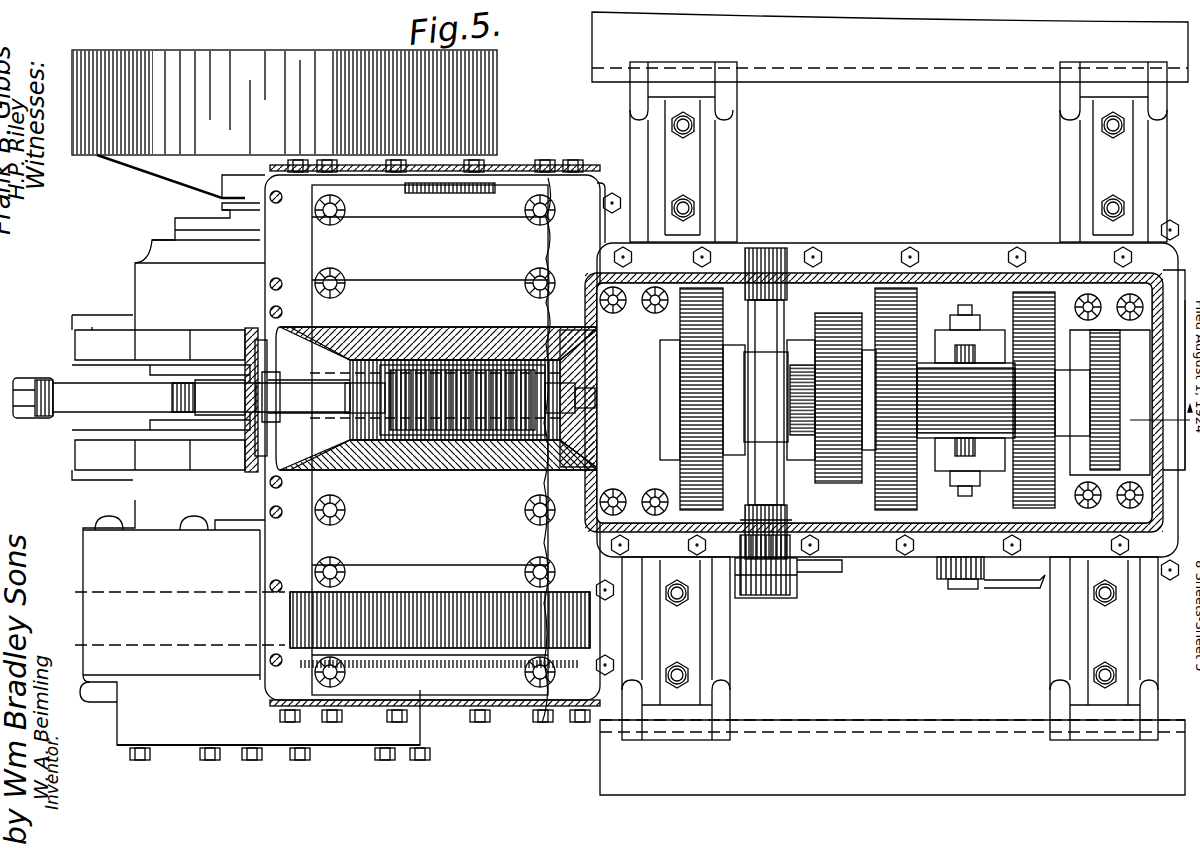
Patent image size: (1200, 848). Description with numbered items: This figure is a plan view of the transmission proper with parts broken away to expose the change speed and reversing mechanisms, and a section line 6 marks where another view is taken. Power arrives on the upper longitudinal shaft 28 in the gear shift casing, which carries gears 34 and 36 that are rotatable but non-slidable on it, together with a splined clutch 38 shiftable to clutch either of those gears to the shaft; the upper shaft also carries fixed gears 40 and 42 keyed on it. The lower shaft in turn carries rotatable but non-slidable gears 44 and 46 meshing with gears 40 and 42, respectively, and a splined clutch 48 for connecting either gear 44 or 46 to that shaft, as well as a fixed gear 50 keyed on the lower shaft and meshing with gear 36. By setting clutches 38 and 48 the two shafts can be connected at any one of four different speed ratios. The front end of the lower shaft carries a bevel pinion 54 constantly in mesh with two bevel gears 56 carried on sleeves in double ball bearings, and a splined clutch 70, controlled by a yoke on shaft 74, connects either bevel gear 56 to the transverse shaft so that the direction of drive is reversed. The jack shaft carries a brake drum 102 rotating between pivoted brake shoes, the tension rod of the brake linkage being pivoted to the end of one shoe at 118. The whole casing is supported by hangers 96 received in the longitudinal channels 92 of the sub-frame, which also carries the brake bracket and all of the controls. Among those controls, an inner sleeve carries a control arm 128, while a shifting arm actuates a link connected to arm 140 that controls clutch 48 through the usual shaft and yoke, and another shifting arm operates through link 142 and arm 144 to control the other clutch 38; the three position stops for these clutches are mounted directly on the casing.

The brake drum 102 is at (177, 145).
The shaft 74 is at (60, 395).
The pivot 118 is at (25, 410).
The upper longitudinal shaft 28 is at (298, 398).
The bevel gears 56 is at (350, 395).
The splined clutch 70 is at (430, 372).
The bevel pinion 54 is at (545, 485).
The gear 34 is at (715, 328).
The splined clutch 38 is at (780, 350).
The gear 36 is at (828, 345).
The fixed gear 40 is at (875, 345).
The fixed gear 42 is at (1030, 370).
The fixed gear 50 is at (850, 475).
The gear 46 is at (925, 490).
The splined clutch 48 is at (985, 470).
The gear 44 is at (1035, 530).
The longitudinal channels 92 is at (920, 60).
The hangers 96 is at (715, 160).
The arm 144 is at (780, 580).
The link 142 is at (828, 575).
The arm 140 is at (945, 582).
The control arm 128 is at (1023, 580).
The section line 6 is at (1161, 424).